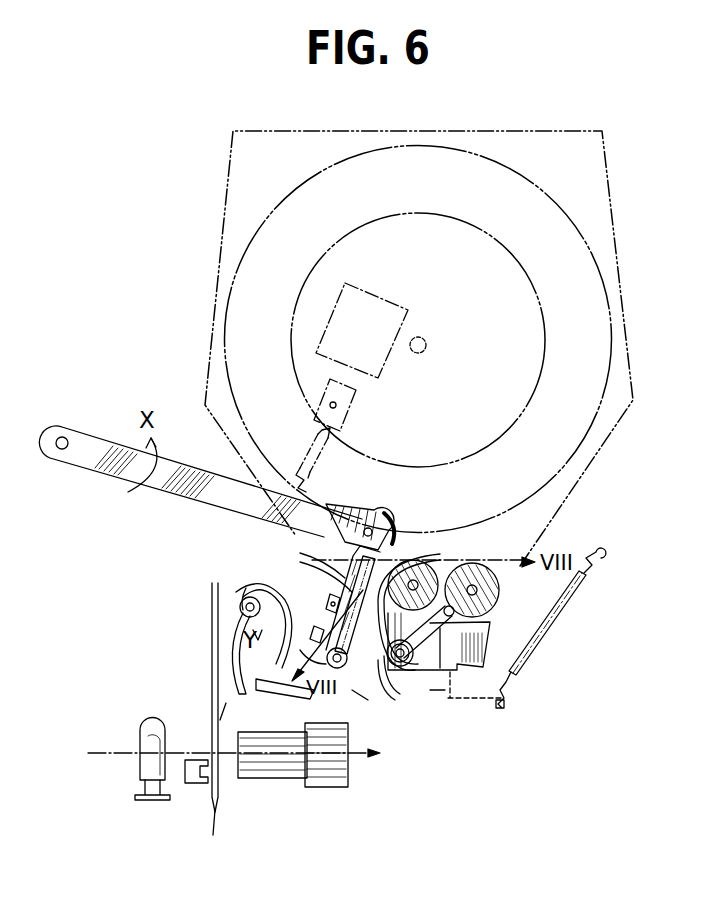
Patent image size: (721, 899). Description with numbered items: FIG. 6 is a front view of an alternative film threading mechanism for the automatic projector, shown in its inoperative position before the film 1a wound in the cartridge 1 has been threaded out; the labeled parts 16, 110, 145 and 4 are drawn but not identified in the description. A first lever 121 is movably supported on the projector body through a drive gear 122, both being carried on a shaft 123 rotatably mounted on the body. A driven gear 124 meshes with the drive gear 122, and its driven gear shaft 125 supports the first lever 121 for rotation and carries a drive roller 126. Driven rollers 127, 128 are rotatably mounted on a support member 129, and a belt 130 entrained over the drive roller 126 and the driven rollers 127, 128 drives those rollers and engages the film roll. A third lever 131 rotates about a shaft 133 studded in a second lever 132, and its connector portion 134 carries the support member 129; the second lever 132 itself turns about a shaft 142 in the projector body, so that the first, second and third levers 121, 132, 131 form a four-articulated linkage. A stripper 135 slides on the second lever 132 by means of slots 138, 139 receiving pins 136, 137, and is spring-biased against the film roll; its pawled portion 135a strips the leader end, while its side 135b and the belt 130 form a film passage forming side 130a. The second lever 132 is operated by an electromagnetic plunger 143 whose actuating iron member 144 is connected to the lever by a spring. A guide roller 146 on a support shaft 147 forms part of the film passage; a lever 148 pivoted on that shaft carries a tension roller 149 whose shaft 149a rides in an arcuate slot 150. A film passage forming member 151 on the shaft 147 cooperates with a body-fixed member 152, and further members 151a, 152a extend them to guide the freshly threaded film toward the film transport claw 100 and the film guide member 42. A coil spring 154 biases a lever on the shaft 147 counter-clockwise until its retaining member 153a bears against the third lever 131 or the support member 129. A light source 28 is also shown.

The cartridge 1 is at (565, 150).
The film 1a is at (530, 353).
The film magazine ring 16 is at (605, 308).
The center shaft 110 is at (416, 336).
The electromagnetic plunger 143 is at (374, 305).
The actuating iron member 144 is at (348, 396).
The connecting strip 145 is at (326, 446).
The second lever 132 is at (101, 430).
The shaft 142 is at (60, 438).
The shaft 133 is at (363, 515).
The pawled portion 135a is at (386, 528).
The third lever 131 is at (376, 556).
The stripper 135 is at (403, 562).
The side 135b is at (335, 565).
The belt 130 is at (436, 556).
The film passage forming side 130a is at (395, 687).
The driven roller 128 is at (440, 566).
The driven roller 127 is at (492, 592).
The support member 129 is at (456, 612).
The shaft 123 is at (470, 640).
The first lever 121 is at (484, 648).
The drive gear 122 is at (540, 636).
The coil spring 154 is at (574, 606).
The drive roller 126 is at (434, 688).
The driven gear shaft 125 is at (398, 667).
The driven gear 124 is at (410, 690).
The connector portion 134 is at (447, 670).
The retaining member 153a is at (440, 692).
The tension roller 149 is at (241, 607).
The shaft 149a is at (240, 596).
The film passage forming member 151 is at (246, 588).
The lever 148 is at (238, 632).
The pin 137 is at (290, 676).
The slot 139 is at (298, 660).
The pin 136 is at (330, 605).
The slot 138 is at (336, 596).
The guide roller 146 is at (331, 668).
The passage forming member 151a is at (340, 670).
The passage forming member 152a is at (375, 718).
The arcuate slot 150 is at (212, 690).
The film guide member 42 is at (221, 812).
The support shaft 147 is at (247, 712).
The film transport claw 100 is at (196, 760).
The light source 28 is at (142, 740).
The film passage forming member 152 is at (274, 742).
The objective lens 4 is at (324, 778).